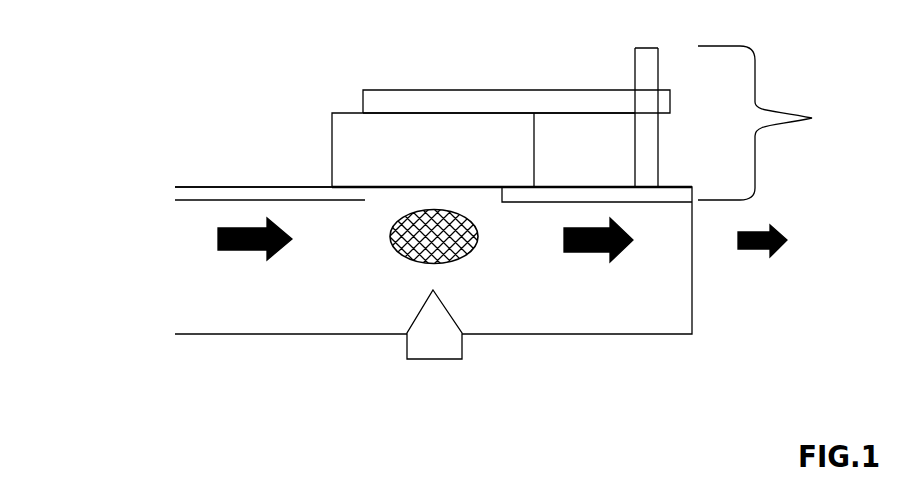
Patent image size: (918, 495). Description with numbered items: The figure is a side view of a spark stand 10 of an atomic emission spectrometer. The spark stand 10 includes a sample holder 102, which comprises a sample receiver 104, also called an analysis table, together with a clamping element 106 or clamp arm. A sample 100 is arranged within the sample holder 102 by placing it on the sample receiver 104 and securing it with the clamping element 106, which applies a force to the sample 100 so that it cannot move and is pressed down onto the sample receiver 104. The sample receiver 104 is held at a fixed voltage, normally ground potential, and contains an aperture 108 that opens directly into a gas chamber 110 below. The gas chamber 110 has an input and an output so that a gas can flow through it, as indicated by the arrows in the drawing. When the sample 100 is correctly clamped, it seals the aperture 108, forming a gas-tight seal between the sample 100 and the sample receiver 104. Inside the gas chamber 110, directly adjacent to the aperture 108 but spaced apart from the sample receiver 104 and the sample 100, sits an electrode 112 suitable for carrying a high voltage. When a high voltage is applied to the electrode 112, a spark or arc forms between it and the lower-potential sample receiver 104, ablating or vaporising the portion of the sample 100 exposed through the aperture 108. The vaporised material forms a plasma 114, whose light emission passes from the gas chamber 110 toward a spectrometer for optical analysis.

The spark stand 10 is at (163, 118).
The sample 100 is at (332, 135).
The sample holder 102 is at (780, 123).
The sample receiver 104 is at (173, 190).
The clamping element 106 is at (473, 92).
The aperture 108 is at (365, 200).
The gas chamber 110 is at (208, 337).
The electrode 112 is at (407, 347).
The plasma 114 is at (463, 257).